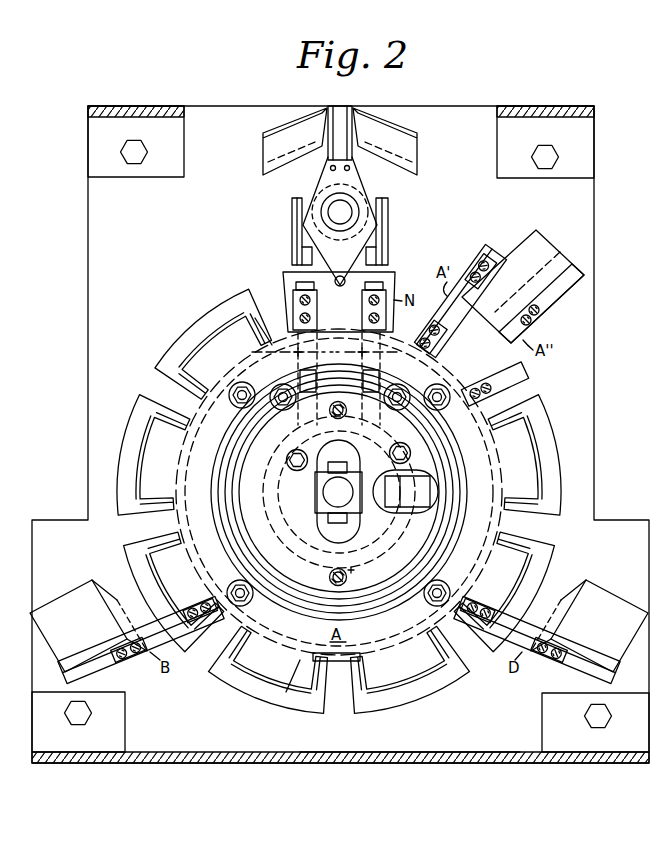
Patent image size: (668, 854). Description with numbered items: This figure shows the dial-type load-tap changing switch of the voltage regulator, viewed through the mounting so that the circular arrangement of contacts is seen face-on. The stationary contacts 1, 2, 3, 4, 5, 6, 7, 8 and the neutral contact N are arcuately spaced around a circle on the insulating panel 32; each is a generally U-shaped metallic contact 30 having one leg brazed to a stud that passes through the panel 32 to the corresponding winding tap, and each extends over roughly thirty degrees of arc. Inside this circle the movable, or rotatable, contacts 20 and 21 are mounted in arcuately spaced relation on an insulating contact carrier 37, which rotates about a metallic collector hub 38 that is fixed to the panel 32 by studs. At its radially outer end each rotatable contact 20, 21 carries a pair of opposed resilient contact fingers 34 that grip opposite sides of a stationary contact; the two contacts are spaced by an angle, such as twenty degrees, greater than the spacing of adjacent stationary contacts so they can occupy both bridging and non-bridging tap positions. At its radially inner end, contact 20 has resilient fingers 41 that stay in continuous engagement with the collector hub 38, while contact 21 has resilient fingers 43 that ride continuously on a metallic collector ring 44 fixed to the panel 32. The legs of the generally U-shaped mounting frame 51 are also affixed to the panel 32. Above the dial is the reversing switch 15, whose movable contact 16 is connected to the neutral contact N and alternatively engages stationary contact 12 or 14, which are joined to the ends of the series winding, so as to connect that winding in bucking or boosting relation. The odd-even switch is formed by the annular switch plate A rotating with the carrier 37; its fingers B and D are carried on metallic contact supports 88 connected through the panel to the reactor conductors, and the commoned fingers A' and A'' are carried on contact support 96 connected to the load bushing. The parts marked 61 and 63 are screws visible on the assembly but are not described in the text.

The stationary contact 1 is at (503, 375).
The stationary contact 2 is at (552, 443).
The stationary contact 3 is at (547, 578).
The stationary contact 4 is at (445, 697).
The stationary contact 5 is at (236, 697).
The stationary contact 6 is at (124, 556).
The stationary contact 7 is at (124, 441).
The stationary contact 8 is at (188, 338).
The stationary contact of reversing switch 12 is at (264, 158).
The stationary contact of reversing switch 14 is at (416, 158).
The reversing switch 15 is at (286, 217).
The movable contact 16 is at (340, 112).
The rotatable contact 20 is at (252, 353).
The rotatable contact 21 is at (335, 352).
The U-shaped metallic contact 30 is at (248, 316).
The insulating panel 32 is at (88, 308).
The resilient contact fingers 34 is at (296, 292).
The insulating contact carrier 37 is at (240, 509).
The metallic collector hub 38 is at (352, 506).
The resilient fingers 41 is at (320, 497).
The resilient fingers 43 is at (393, 512).
The metallic collector ring 44 is at (354, 570).
The mounting frame 51 is at (418, 752).
The screw 61 is at (347, 410).
The screw head 63 is at (329, 410).
The metallic contact support 88 is at (72, 672).
The metallic contact support 96 is at (540, 240).